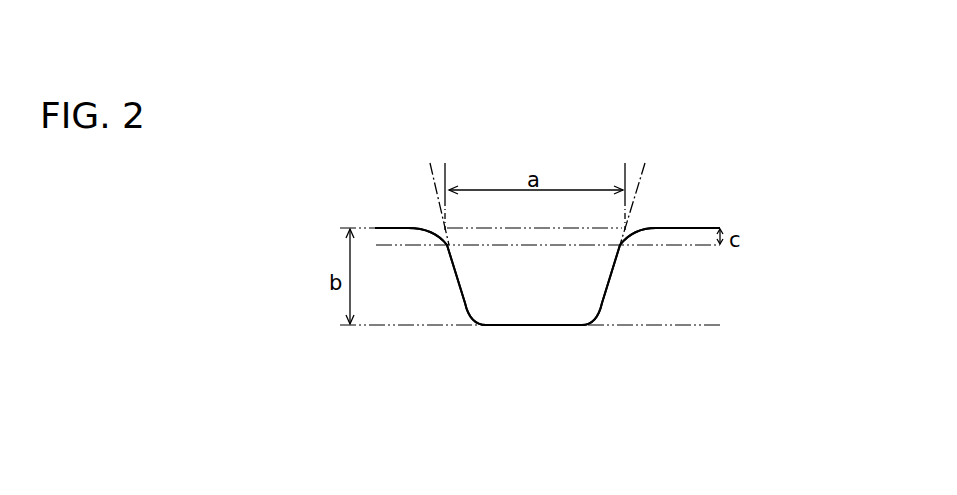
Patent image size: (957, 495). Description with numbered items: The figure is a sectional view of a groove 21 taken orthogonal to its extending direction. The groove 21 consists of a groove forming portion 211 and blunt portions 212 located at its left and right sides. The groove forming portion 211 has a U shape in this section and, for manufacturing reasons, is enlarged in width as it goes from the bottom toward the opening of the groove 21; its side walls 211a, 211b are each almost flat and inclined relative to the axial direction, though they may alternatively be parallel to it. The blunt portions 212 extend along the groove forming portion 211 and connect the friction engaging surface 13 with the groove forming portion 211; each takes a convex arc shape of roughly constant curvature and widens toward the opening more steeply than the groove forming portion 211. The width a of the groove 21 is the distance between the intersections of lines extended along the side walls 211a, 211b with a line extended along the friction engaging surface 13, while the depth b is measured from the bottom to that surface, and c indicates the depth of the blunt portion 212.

The groove 21 is at (615, 141).
The friction engaging surface 13 is at (376, 228).
The blunt portion 212 is at (441, 222).
The groove forming portion 211 is at (544, 317).
The side wall 211a is at (460, 290).
The side wall 211b is at (605, 293).